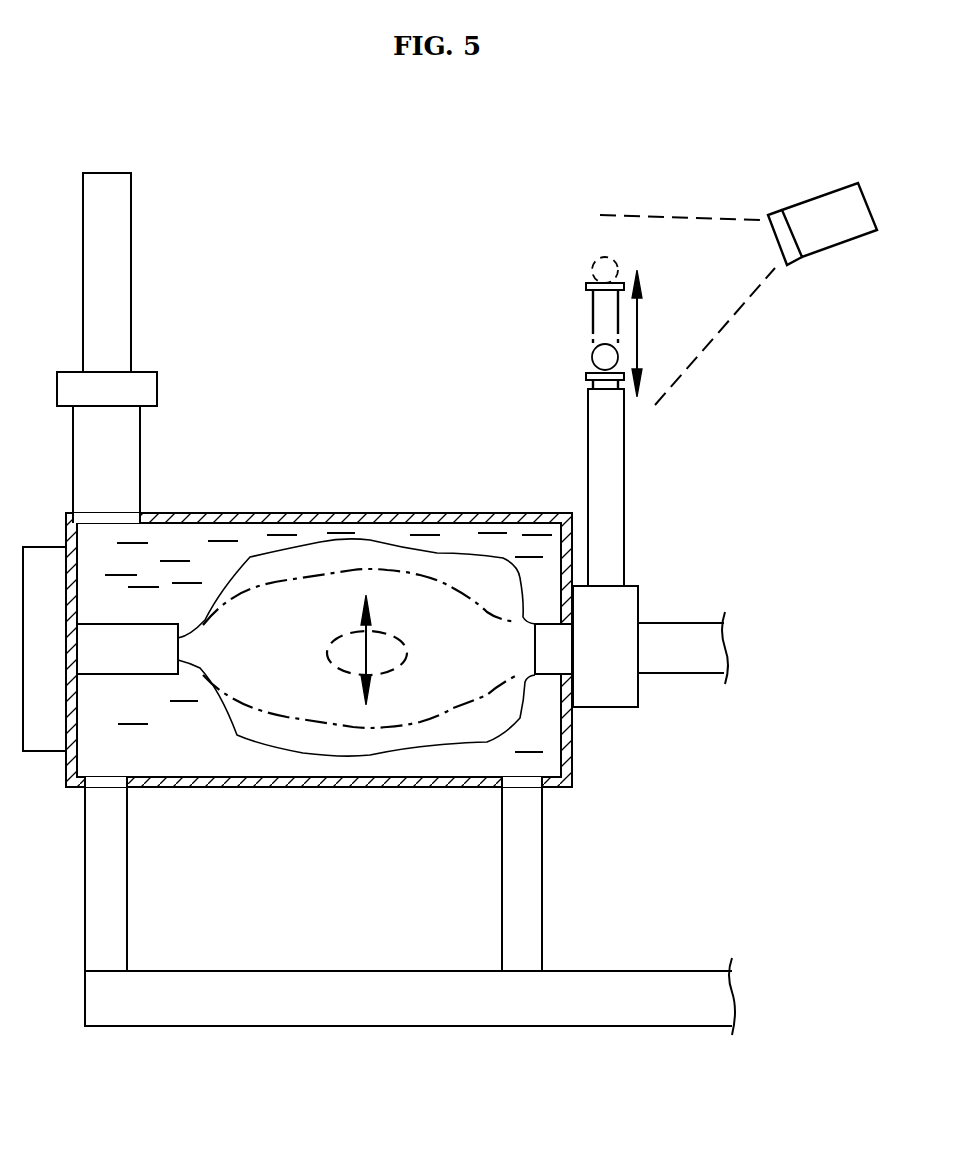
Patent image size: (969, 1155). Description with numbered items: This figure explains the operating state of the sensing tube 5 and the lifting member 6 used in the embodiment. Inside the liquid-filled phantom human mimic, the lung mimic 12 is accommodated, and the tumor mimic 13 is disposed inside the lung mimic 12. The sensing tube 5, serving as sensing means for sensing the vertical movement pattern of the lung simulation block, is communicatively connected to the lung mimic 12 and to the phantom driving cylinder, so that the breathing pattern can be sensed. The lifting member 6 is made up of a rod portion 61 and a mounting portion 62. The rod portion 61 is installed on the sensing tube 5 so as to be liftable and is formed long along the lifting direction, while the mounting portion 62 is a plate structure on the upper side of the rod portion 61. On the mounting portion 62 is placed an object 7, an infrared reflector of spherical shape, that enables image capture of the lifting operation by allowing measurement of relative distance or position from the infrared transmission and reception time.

The sensing tube 5 is at (552, 462).
The lifting member 6 is at (432, 233).
The rod portion 61 is at (593, 323).
The mounting portion 62 is at (592, 278).
The object 7 is at (603, 257).
The lung mimic 12 is at (263, 735).
The tumor mimic 13 is at (383, 657).